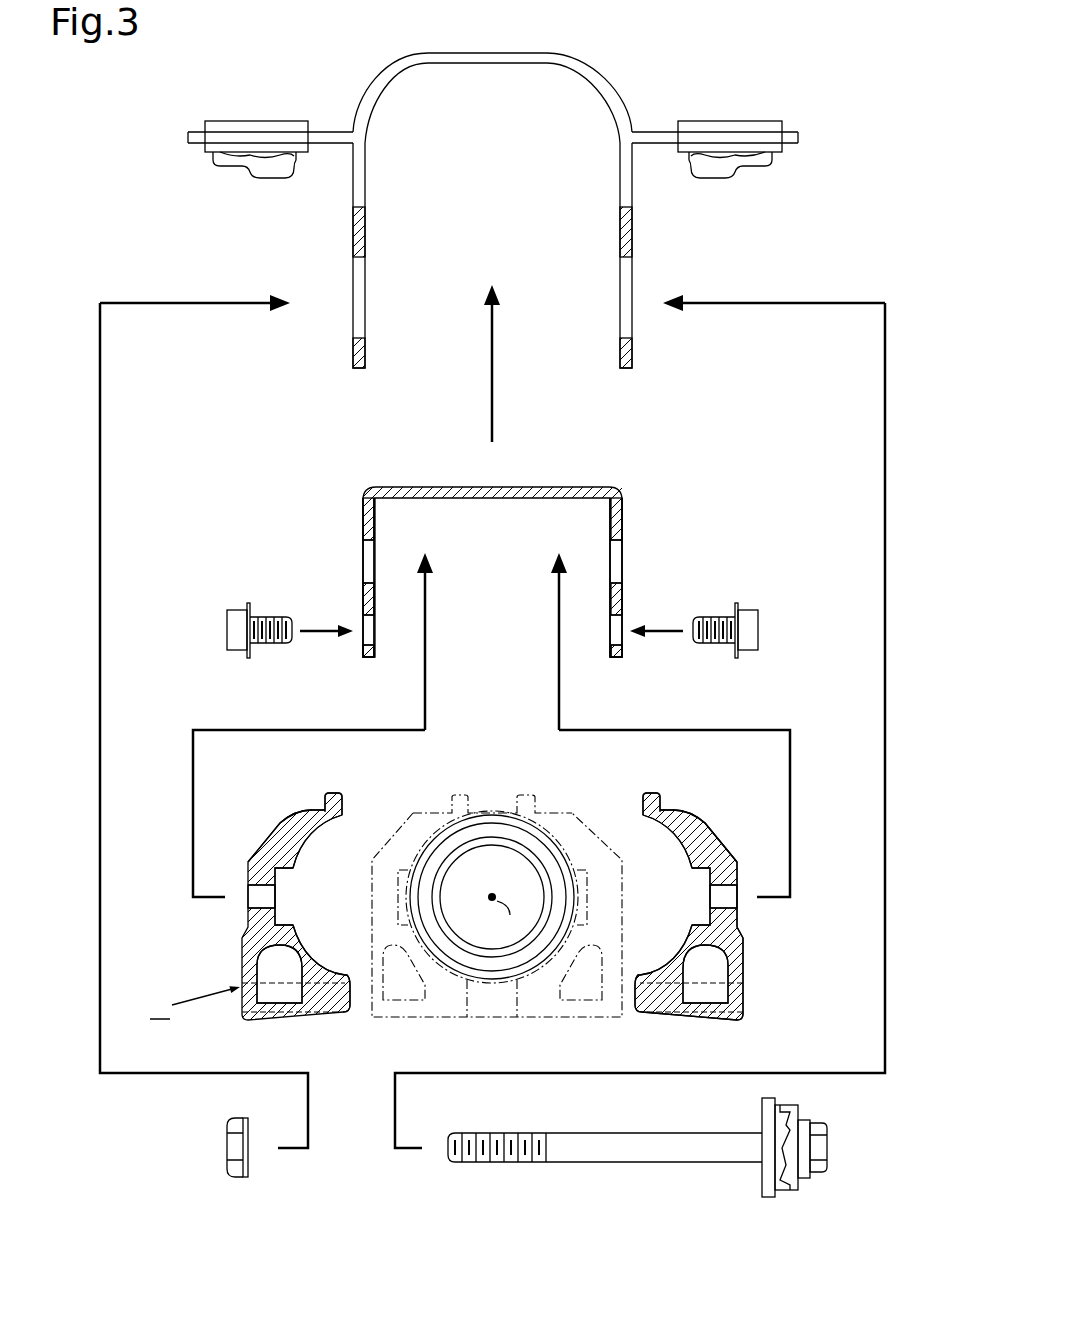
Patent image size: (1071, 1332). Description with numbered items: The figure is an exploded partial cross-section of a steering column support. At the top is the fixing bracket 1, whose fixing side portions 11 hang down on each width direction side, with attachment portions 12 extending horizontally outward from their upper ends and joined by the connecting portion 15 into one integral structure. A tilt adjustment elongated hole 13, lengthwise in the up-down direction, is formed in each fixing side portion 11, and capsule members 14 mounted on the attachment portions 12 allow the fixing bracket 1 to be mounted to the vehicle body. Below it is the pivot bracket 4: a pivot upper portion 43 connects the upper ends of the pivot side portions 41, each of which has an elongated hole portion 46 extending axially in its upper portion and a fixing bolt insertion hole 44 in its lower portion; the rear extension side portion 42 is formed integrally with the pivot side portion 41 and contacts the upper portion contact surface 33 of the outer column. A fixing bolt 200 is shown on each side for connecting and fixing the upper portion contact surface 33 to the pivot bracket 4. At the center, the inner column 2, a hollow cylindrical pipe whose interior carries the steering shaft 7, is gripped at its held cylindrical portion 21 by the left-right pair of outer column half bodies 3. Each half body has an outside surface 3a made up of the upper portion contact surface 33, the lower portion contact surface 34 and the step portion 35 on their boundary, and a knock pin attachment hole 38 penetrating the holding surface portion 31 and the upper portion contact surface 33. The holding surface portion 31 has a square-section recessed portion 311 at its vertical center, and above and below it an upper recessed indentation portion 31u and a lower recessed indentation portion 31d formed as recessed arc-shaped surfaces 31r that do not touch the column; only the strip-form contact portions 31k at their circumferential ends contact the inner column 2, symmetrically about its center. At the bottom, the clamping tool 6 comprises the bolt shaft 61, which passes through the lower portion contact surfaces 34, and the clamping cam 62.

The fixing bracket 1 is at (493, 192).
The inner column 2 is at (514, 870).
The outer column half body 3 is at (499, 901).
The outside surface 3a is at (740, 912).
The pivot bracket 4 is at (505, 564).
The clamping tool 6 is at (643, 1177).
The steering shaft 7 is at (465, 843).
The fixing side portion 11 is at (355, 225).
The attachment portion 12 is at (332, 135).
The tilt adjustment elongated hole 13 is at (355, 322).
The capsule member 14 is at (262, 121).
The connecting portion 15 is at (545, 57).
The held cylindrical portion 21 is at (555, 845).
The holding surface portion 31 is at (295, 850).
The lower recessed indentation portion 31d is at (265, 955).
The strip-form contact portion 31k is at (340, 830).
The recessed arc-shaped surface 31r is at (310, 835).
The upper recessed indentation portion 31u is at (280, 835).
The upper portion contact surface 33 is at (712, 840).
The lower portion contact surface 34 is at (748, 990).
The step portion 35 is at (748, 922).
The knock pin attachment hole 38 is at (258, 895).
The pivot side portion 41 is at (505, 577).
The rear extension side portion 42 is at (365, 518).
The pivot upper portion 43 is at (535, 492).
The fixing bolt insertion hole 44 is at (372, 632).
The elongated hole portion 46 is at (365, 565).
The bolt shaft 61 is at (640, 1157).
The clamping cam 62 is at (772, 1198).
The fixing bolt 200 is at (234, 648).
The recessed portion 311 is at (280, 930).